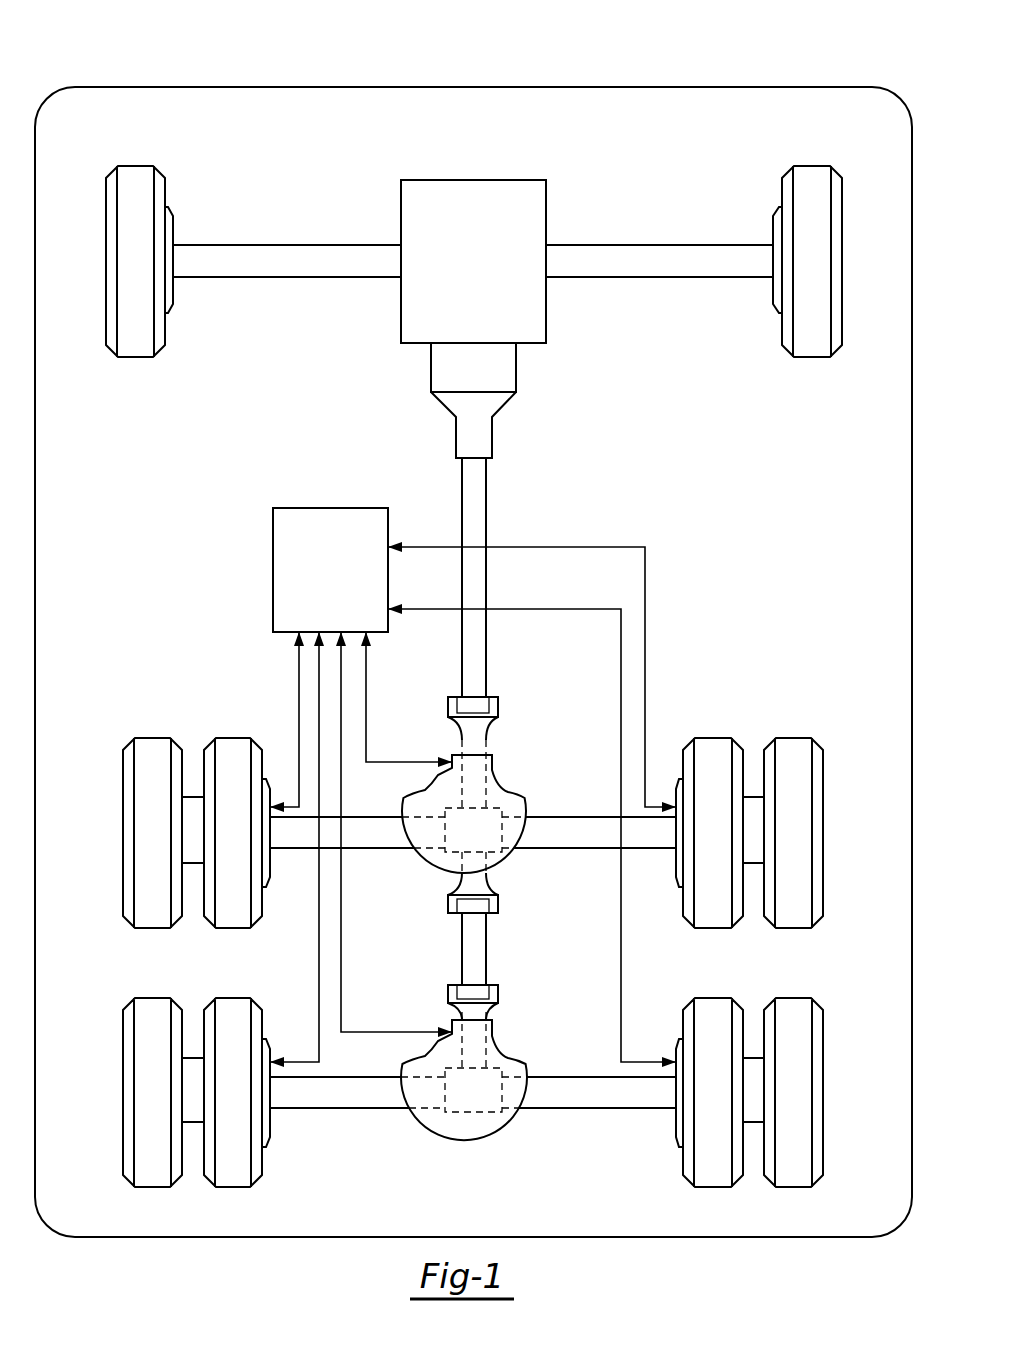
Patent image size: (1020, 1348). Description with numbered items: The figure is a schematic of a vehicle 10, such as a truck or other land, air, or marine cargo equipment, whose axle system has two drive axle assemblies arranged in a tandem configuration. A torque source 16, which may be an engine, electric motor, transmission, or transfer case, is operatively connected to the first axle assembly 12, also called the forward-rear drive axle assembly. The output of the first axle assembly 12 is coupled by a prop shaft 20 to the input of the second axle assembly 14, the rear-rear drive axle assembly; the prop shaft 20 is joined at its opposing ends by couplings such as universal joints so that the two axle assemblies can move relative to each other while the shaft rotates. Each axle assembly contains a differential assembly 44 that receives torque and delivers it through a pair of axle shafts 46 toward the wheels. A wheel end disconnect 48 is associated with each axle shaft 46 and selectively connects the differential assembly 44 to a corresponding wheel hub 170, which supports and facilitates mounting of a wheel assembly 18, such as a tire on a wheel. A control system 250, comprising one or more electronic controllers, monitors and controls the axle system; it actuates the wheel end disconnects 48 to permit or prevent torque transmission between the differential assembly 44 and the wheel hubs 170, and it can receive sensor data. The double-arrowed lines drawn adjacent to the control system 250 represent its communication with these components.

The vehicle 10 is at (695, 86).
The first axle assembly 12 is at (113, 822).
The second axle assembly 14 is at (115, 1105).
The torque source 16 is at (460, 271).
The wheel assembly 18 is at (163, 930).
The prop shaft 20 is at (472, 943).
The differential assembly 44 is at (488, 838).
The axle shaft 46 is at (347, 846).
The wheel end disconnect 48 is at (193, 797).
The wheel hub 170 is at (268, 886).
The control system 250 is at (305, 585).